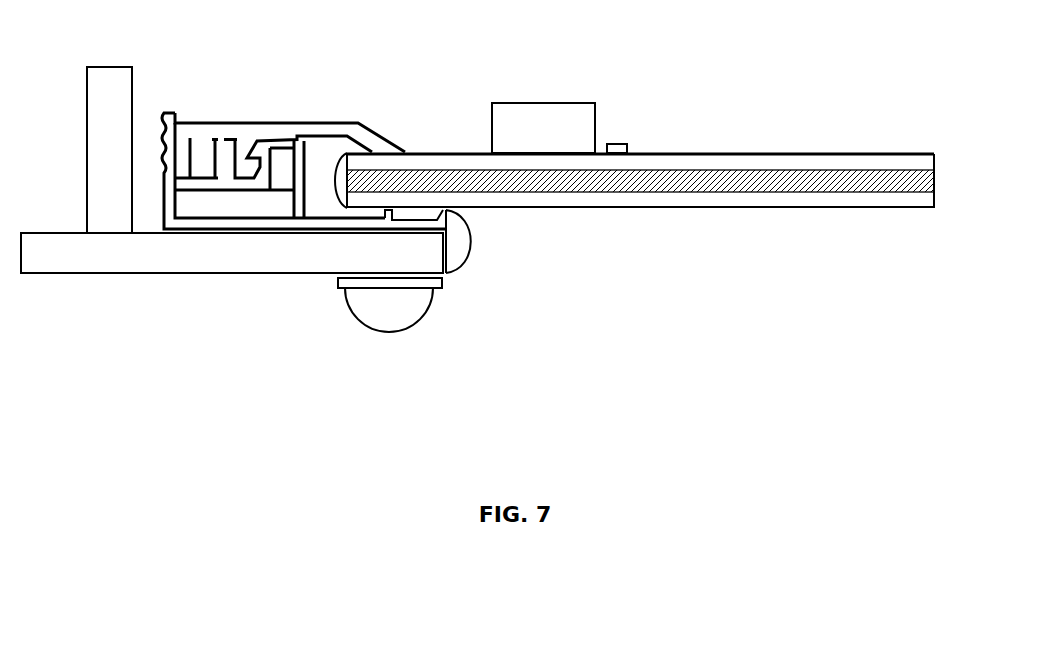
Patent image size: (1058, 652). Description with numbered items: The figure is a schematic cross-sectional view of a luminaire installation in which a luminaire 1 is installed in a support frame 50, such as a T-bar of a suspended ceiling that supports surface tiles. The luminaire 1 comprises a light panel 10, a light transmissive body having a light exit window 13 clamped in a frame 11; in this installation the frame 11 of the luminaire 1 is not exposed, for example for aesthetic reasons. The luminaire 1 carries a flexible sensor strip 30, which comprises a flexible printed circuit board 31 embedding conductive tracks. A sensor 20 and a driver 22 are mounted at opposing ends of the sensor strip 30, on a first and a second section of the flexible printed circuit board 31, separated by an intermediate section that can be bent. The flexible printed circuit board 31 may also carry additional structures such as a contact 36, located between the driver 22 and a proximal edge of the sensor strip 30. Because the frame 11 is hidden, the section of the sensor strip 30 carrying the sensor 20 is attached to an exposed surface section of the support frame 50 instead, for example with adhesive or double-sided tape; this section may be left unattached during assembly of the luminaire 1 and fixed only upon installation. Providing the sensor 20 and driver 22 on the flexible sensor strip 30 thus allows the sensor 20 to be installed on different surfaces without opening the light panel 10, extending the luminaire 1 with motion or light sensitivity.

The luminaire 1 is at (508, 416).
The light panel 10 is at (770, 200).
The frame 11 is at (312, 133).
The light exit window 13 is at (660, 226).
The sensor 20 is at (415, 306).
The driver 22 is at (548, 103).
The sensor strip 30 is at (446, 152).
The flexible printed circuit board 31 is at (472, 237).
The contact 36 is at (622, 143).
The support frame 50 is at (173, 258).